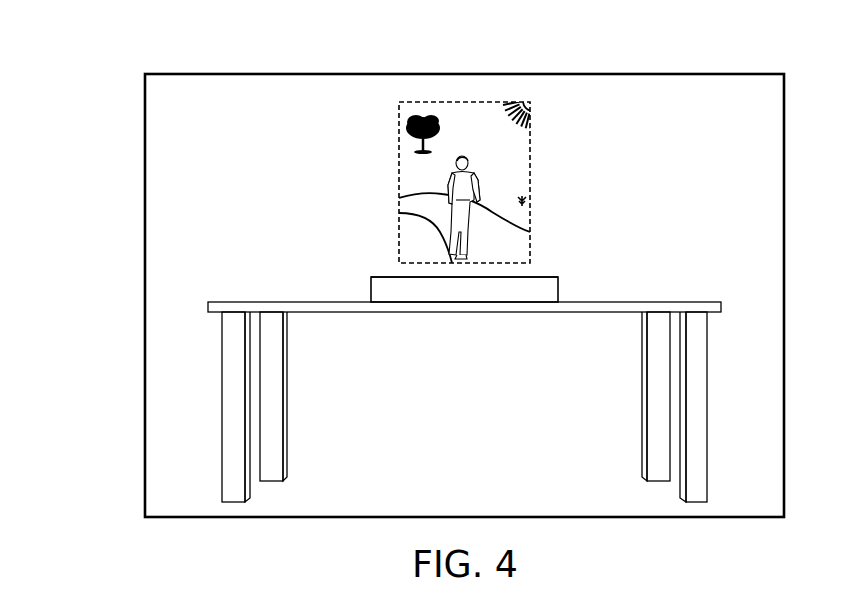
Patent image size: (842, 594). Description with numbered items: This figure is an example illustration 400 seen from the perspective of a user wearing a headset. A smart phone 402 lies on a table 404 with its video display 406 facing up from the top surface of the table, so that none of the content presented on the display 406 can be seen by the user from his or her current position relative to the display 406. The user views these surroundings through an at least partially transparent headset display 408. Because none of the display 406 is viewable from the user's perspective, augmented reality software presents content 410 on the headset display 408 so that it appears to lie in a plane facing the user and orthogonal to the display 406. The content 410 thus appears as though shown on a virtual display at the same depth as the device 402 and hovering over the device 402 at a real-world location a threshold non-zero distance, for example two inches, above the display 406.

The example illustration 400 is at (89, 42).
The smart phone 402 is at (371, 290).
The table 404 is at (222, 385).
The video display 406 is at (538, 277).
The headset display 408 is at (145, 277).
The content 410 is at (399, 182).